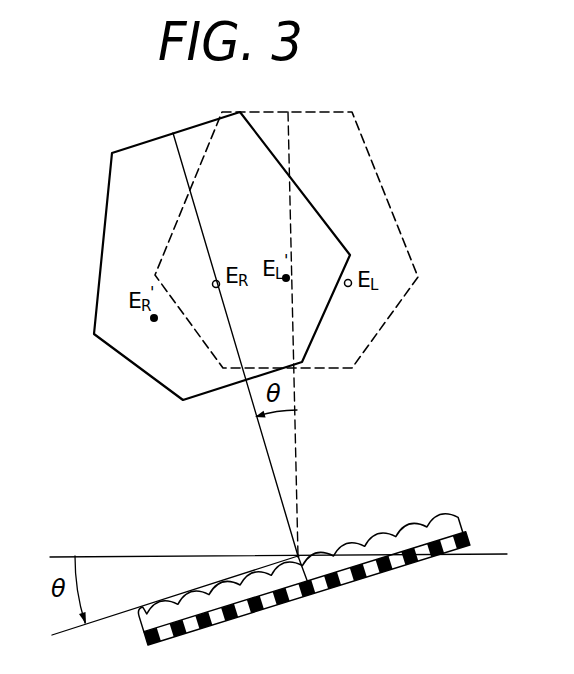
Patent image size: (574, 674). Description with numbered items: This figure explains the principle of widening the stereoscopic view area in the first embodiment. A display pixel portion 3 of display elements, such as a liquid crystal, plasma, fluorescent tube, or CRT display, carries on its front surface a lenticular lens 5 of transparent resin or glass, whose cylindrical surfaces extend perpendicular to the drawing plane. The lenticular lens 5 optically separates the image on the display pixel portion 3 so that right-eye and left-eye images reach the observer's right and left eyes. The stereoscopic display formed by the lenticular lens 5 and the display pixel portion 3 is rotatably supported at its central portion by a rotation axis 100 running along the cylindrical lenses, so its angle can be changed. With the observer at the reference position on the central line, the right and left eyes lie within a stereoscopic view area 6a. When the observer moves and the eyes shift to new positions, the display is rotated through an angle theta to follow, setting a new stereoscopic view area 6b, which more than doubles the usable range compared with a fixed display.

The display pixel portion 3 is at (468, 541).
The lenticular lens 5 is at (456, 518).
The stereoscopic view area 6a is at (385, 190).
The stereoscopic view area 6b is at (110, 176).
The rotation axis 100 is at (300, 552).